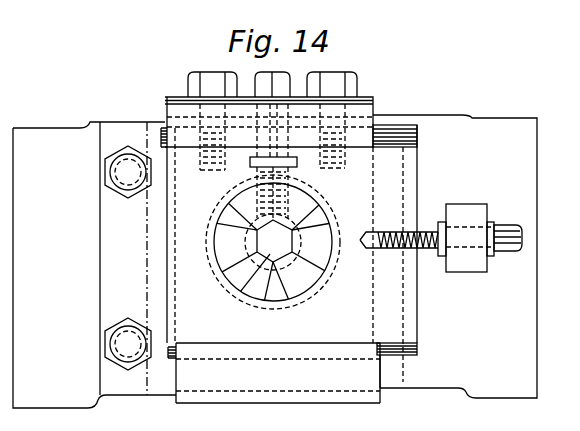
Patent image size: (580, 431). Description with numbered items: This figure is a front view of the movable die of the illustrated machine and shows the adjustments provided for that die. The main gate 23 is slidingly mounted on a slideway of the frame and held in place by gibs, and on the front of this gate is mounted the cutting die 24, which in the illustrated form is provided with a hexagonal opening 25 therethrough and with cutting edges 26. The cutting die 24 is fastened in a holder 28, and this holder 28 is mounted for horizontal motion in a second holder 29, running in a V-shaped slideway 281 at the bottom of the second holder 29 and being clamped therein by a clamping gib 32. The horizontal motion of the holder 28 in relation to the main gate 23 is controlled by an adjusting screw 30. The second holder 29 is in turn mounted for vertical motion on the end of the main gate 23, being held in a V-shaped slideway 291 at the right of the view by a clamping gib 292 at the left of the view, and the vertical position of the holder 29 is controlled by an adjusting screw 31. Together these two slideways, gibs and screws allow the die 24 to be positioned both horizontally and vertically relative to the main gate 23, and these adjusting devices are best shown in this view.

The main gate 23 is at (487, 122).
The cutting die 24 is at (300, 288).
The hexagonal opening 25 is at (248, 303).
The cutting edges 26 is at (274, 241).
The holder 28 is at (203, 337).
The V-shaped slideway 281 is at (252, 382).
The second holder 29 is at (347, 402).
The V-shaped slideway 291 is at (390, 117).
The clamping gib 292 is at (123, 128).
The adjusting screw 30 is at (427, 252).
The adjusting screw 31 is at (283, 88).
The clamping gib 32 is at (365, 92).